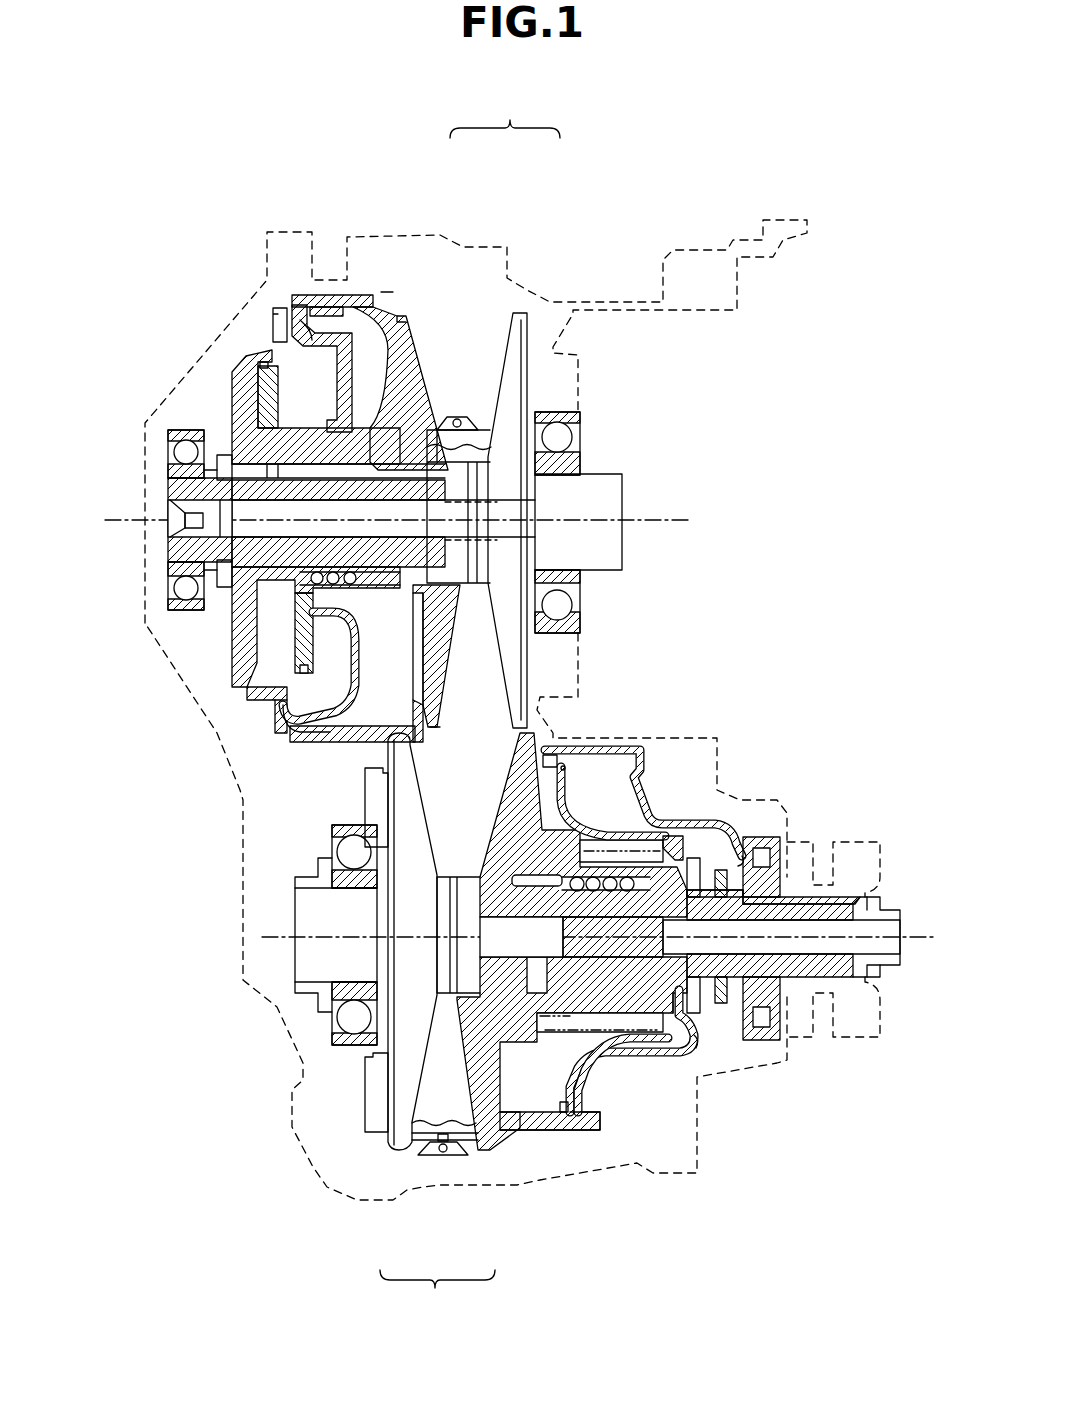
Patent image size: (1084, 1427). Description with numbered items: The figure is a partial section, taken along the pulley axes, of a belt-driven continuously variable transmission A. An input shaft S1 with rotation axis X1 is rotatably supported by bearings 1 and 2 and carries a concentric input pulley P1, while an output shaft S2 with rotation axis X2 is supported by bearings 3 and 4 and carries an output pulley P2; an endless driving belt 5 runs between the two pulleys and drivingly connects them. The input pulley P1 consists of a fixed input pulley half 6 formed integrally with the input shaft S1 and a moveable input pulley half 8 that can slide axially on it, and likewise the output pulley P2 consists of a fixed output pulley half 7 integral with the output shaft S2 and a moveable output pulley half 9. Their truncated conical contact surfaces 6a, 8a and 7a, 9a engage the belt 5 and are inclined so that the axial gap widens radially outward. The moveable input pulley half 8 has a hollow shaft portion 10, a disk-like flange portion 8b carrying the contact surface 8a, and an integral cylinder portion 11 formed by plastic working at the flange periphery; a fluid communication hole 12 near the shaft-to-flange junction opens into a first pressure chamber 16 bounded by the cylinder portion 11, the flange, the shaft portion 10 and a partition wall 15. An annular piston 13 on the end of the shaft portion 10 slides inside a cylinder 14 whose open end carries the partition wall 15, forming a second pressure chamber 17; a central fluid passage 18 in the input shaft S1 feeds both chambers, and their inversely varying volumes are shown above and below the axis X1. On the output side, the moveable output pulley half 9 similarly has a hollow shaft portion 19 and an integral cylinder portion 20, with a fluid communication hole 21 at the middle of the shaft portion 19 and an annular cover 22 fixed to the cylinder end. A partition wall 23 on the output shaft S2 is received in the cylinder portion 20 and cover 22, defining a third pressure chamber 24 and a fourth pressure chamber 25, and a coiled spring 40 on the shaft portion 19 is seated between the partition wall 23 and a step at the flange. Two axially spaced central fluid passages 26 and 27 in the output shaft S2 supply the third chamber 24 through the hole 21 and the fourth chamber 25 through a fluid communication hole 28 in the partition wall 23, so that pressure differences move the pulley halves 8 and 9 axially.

The belt-driven CVT A is at (226, 262).
The input pulley P1 is at (505, 113).
The output pulley P2 is at (437, 1294).
The rotation axis X1 is at (660, 520).
The rotation axis X2 is at (927, 940).
The input shaft S1 is at (607, 488).
The output shaft S2 is at (305, 923).
The bearing 1 is at (168, 432).
The bearing 2 is at (560, 410).
The bearing 3 is at (340, 837).
The bearing 4 is at (778, 835).
The endless driving belt 5 is at (477, 417).
The fixed input pulley half 6 is at (528, 305).
The contact surface 6a is at (497, 350).
The fixed output pulley half 7 is at (397, 1158).
The contact surface 7a is at (417, 805).
The moveable input pulley half 8 is at (405, 311).
The contact surface 8a is at (413, 370).
The flange portion 8b is at (423, 457).
The moveable output pulley half 9 is at (484, 1158).
The contact surface 9a is at (500, 925).
The hollow shaft portion 10 is at (300, 390).
The integral cylinder portion 11 is at (383, 291).
The fluid communication hole 12 is at (395, 352).
The annular piston 13 is at (270, 410).
The cylinder 14 is at (245, 357).
The partition wall 15 is at (293, 293).
The first pressure chamber 16 is at (338, 303).
The second pressure chamber 17 is at (273, 322).
The central fluid passage 18 is at (233, 510).
The hollow shaft portion 19 is at (667, 1065).
The integral cylinder portion 20 is at (540, 1095).
The fluid communication hole 21 is at (612, 1058).
The annular cover 22 is at (705, 1062).
The partition wall 23 is at (577, 1068).
The third pressure chamber 24 is at (553, 792).
The fourth pressure chamber 25 is at (617, 802).
The central fluid passage 26 is at (503, 933).
The central fluid passage 27 is at (823, 945).
The fluid communication hole 28 is at (733, 830).
The coiled spring 40 is at (543, 1075).